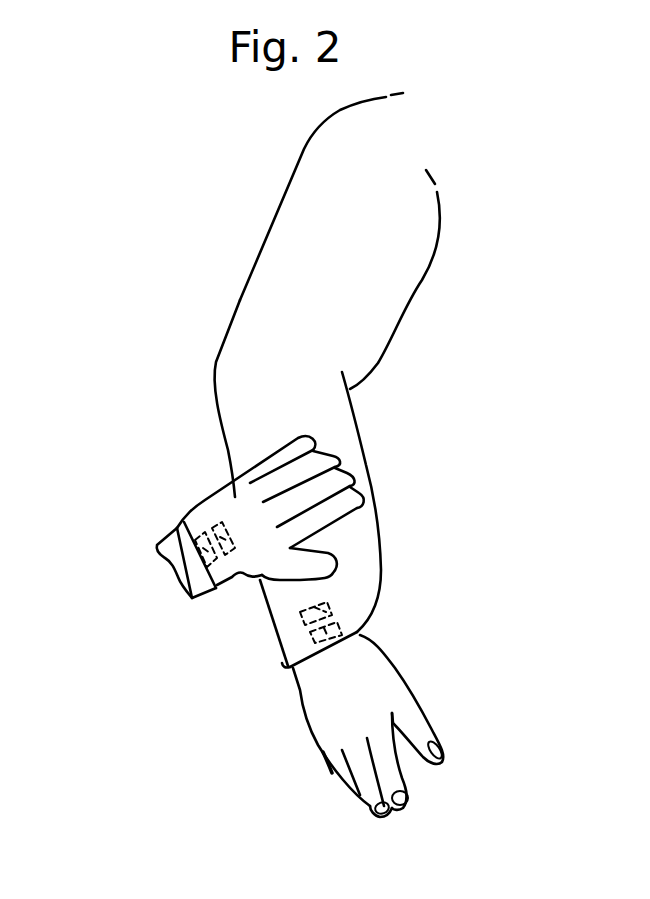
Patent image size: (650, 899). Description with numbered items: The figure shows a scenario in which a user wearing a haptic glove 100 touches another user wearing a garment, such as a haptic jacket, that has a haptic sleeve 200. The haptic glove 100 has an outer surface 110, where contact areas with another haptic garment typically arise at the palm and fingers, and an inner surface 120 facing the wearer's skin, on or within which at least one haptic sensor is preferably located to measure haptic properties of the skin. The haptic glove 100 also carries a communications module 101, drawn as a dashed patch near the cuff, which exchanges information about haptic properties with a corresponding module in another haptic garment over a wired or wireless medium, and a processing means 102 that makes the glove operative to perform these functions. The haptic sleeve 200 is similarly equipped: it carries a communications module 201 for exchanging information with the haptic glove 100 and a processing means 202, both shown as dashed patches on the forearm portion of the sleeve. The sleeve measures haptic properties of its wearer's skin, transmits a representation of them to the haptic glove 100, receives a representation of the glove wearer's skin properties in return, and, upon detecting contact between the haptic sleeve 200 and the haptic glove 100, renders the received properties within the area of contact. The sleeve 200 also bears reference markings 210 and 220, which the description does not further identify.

The haptic glove 100 is at (176, 477).
The communications module 101 is at (197, 547).
The processing means 102 is at (213, 560).
The outer surface 110 is at (228, 482).
The inner surface 120 is at (252, 557).
The haptic sleeve 200 is at (281, 290).
The communications module 201 is at (332, 608).
The processing means 202 is at (337, 645).
The sleeve 210 is at (353, 540).
The sleeve cuff 220 is at (371, 562).